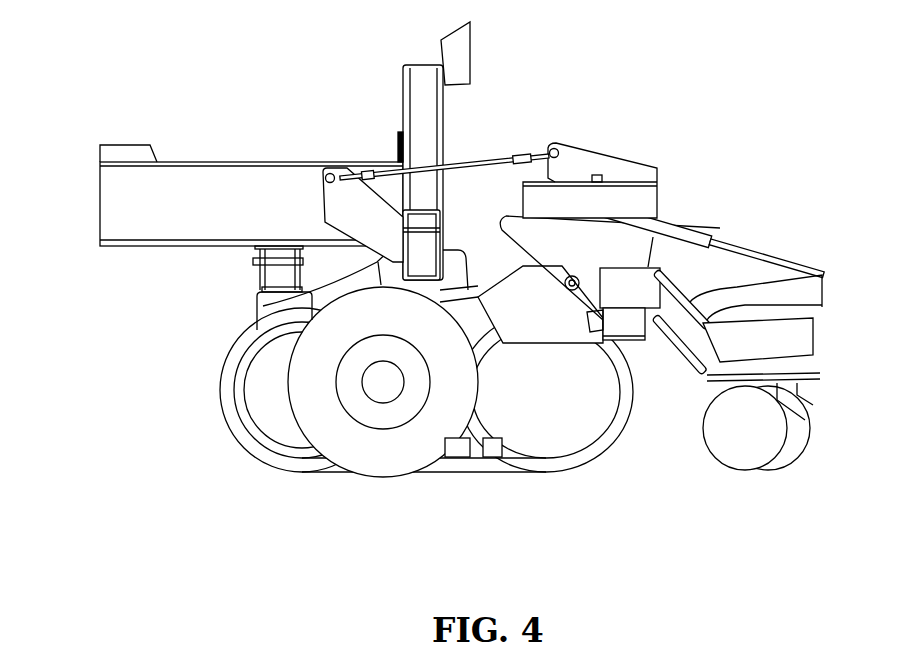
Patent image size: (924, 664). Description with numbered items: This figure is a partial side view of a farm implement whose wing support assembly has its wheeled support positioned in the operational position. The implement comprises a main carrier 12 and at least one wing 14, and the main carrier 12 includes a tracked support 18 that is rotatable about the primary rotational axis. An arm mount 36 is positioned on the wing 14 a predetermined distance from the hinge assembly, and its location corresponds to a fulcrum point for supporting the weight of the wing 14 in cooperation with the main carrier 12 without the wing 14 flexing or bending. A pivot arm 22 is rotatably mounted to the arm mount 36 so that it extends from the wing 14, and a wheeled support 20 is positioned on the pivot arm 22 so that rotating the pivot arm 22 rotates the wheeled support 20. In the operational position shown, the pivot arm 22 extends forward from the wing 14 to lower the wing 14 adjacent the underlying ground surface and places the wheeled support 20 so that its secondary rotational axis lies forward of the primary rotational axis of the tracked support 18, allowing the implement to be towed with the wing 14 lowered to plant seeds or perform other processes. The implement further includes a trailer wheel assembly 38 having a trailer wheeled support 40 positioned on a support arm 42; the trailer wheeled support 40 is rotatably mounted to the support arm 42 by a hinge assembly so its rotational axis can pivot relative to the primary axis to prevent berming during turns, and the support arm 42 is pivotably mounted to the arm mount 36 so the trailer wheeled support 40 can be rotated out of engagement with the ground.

The main carrier 12 is at (112, 126).
The wing 14 is at (660, 145).
The tracked support 18 is at (255, 457).
The wheeled support 20 is at (382, 475).
The pivot arm 22 is at (508, 305).
The arm mount 36 is at (683, 252).
The trailer wheel assembly 38 is at (828, 233).
The trailer wheeled support 40 is at (738, 470).
The support arm 42 is at (686, 352).